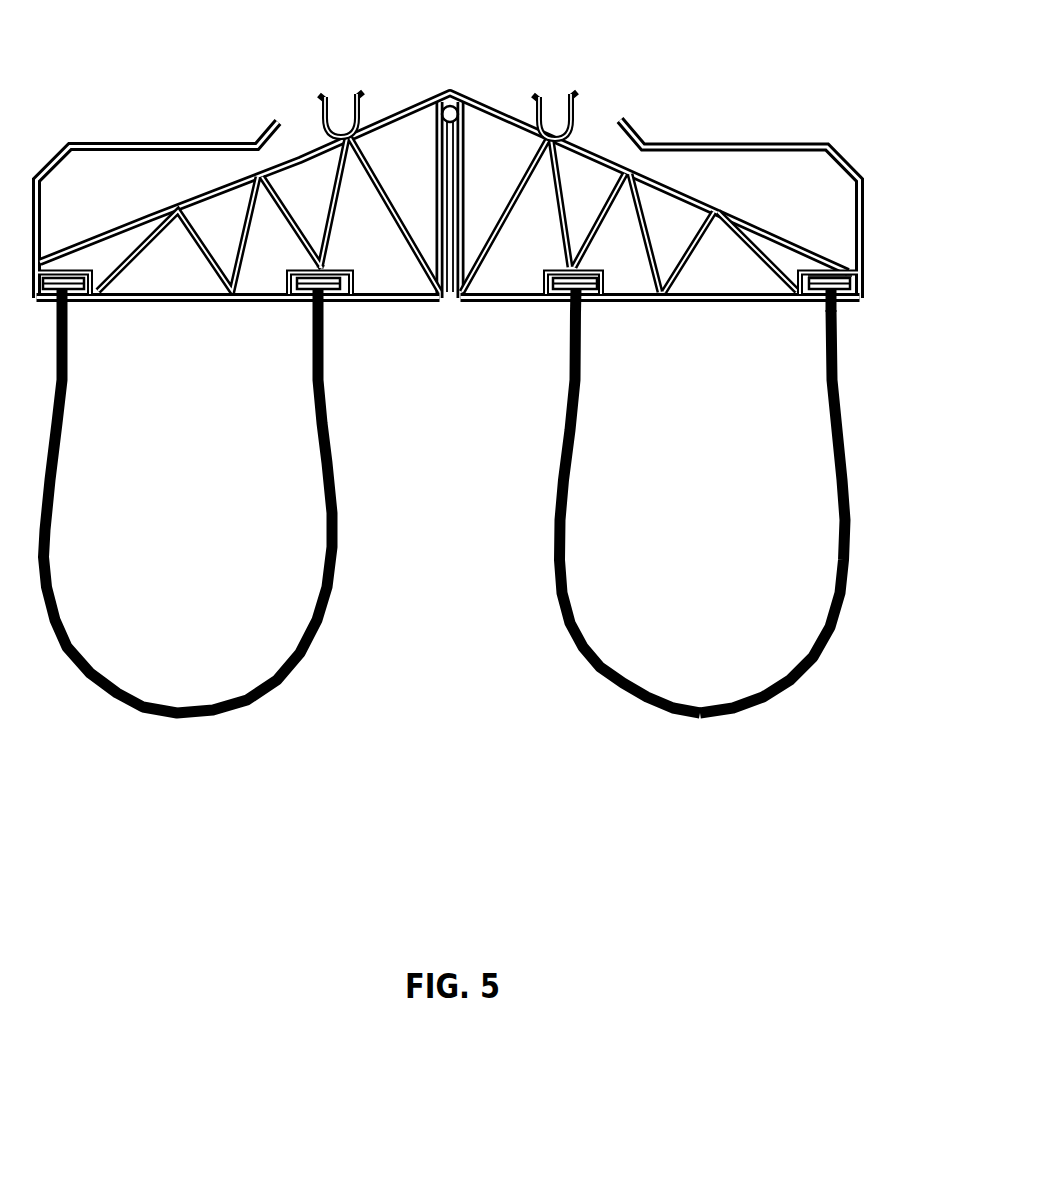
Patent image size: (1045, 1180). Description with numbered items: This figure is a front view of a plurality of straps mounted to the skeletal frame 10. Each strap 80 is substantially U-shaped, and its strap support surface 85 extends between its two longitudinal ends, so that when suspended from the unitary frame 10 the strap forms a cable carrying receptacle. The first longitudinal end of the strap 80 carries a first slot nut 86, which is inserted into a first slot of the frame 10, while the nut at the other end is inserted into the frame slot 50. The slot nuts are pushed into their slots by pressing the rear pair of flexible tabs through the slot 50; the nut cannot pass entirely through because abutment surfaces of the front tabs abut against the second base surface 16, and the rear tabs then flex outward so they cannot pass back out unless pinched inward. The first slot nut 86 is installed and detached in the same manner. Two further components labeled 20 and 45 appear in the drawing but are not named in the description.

The skeletal frame 10 is at (490, 98).
The second base surface 16 is at (703, 300).
The T-bolt fastener 20 is at (823, 305).
The T-bolt fastener 45 is at (567, 305).
The frame slot 50 is at (841, 306).
The strap 80 is at (853, 519).
The strap support surface 85 is at (573, 637).
The first slot nut 86 is at (587, 305).